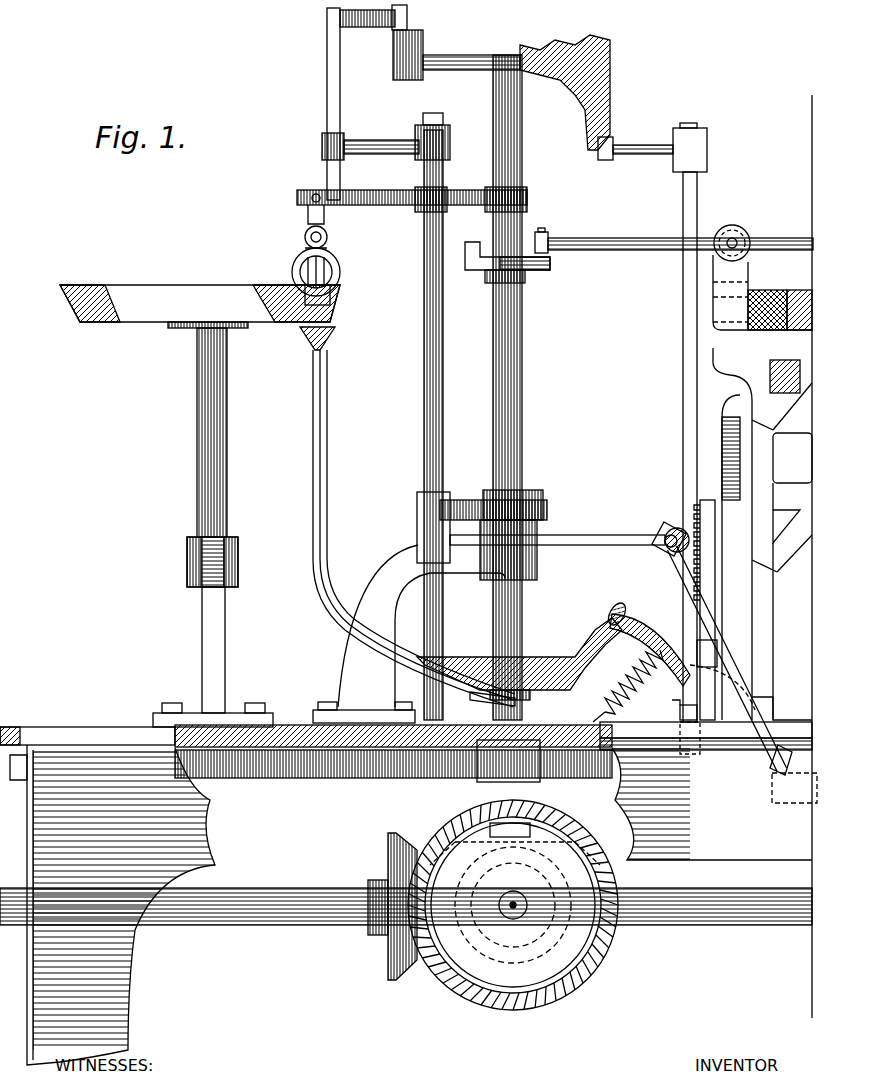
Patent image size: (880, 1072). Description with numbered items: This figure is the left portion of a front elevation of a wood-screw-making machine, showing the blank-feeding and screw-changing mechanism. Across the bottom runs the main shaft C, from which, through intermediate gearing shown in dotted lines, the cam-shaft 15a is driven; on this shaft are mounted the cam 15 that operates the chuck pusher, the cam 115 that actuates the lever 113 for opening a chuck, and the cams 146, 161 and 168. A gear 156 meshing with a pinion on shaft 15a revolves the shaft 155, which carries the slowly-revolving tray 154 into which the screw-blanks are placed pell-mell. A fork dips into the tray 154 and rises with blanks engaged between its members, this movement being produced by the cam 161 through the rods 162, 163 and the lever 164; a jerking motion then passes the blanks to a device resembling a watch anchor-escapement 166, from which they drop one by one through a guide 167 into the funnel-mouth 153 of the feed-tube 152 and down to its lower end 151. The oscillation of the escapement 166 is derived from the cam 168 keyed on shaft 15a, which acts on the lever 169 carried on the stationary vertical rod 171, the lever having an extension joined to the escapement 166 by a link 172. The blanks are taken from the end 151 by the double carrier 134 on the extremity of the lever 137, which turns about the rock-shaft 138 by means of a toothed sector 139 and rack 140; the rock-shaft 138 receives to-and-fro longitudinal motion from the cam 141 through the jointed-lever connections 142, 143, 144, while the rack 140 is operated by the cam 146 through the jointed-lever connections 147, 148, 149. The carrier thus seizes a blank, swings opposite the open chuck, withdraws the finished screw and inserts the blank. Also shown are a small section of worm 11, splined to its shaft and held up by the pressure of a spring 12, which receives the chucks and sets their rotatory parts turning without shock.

The small section of worm 11 is at (795, 292).
The spring 12 is at (757, 292).
The cam 15 is at (545, 656).
The cam-shaft 15a is at (522, 425).
The lever 113 is at (632, 243).
The cam 115 is at (545, 270).
The double carrier 134 is at (765, 750).
The lever 137 is at (717, 661).
The rock-shaft 138 is at (665, 550).
The toothed sector 139 is at (683, 528).
The rack 140 is at (790, 555).
The cam 141 is at (545, 497).
The jointed-lever connection 142 is at (460, 499).
The jointed-lever connection 143 is at (417, 532).
The jointed-lever connection 144 is at (588, 536).
The cam 146 is at (613, 140).
The jointed-lever connection 147 is at (697, 182).
The jointed-lever connection 148 is at (680, 712).
The jointed-lever connection 149 is at (693, 756).
The lower end of feed-tube 151 is at (490, 694).
The feed-tube 152 is at (328, 462).
The funnel-mouth 153 is at (336, 341).
The revolving tray 154 is at (150, 305).
The shaft 155 is at (227, 464).
The gear 156 is at (325, 778).
The cam 161 is at (452, 52).
The rod 162 is at (327, 75).
The rod 163 is at (330, 233).
The lever 164 is at (322, 146).
The escapement 166 is at (292, 268).
The guide 167 is at (300, 307).
The cam 168 is at (527, 198).
The lever 169 is at (460, 190).
The vertical rod 171 is at (443, 382).
The link 172 is at (355, 190).
The main shaft C is at (694, 926).